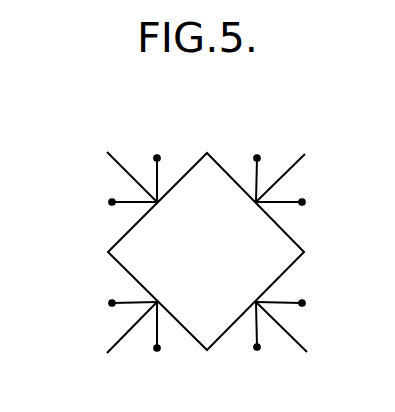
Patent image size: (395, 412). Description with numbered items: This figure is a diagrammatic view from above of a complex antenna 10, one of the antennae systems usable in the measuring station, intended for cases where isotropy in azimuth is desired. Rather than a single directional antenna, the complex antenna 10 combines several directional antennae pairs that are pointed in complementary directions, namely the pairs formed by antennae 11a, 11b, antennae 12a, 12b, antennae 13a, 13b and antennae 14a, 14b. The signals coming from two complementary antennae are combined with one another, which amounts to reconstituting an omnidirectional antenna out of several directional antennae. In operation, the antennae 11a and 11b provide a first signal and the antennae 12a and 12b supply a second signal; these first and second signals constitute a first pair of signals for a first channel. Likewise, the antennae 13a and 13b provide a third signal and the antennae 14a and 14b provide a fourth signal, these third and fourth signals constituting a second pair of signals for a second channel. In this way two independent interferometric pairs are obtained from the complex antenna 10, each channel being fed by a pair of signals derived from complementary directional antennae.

The complex antenna 10 is at (102, 270).
The antenna 11a is at (157, 158).
The antenna 11b is at (257, 347).
The antenna 12a is at (257, 158).
The antenna 12b is at (157, 348).
The antenna 13a is at (112, 303).
The antenna 13b is at (302, 202).
The antenna 14a is at (112, 202).
The antenna 14b is at (302, 303).